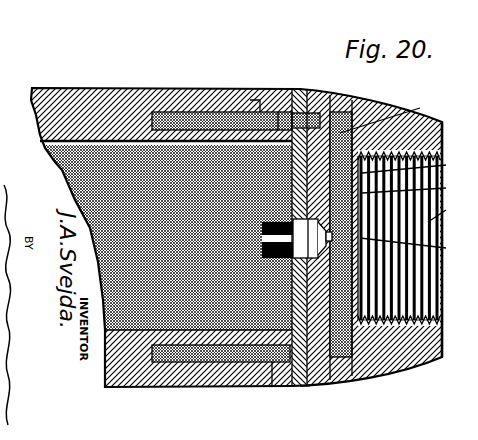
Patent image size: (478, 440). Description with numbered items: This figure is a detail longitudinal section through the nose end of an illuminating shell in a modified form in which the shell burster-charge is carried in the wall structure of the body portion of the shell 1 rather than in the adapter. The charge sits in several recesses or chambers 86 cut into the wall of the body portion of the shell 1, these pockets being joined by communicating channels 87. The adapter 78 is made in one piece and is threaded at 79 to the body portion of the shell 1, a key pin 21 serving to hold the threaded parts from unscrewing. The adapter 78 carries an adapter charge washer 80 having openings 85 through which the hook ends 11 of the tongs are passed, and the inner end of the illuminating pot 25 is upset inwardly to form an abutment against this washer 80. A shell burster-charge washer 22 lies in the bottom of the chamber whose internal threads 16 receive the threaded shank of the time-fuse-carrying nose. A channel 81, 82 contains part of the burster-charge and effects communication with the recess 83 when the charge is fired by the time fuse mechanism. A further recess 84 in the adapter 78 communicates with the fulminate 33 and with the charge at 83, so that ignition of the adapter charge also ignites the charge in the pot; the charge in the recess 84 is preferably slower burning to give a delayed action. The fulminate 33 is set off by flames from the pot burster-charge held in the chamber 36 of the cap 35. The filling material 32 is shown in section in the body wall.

The body portion of the shell 1 is at (91, 88).
The illuminating pot 25 is at (45, 141).
The filling material 32 is at (62, 167).
The recesses or chambers 86 is at (181, 112).
The threads 79 is at (255, 100).
The key pin 21 is at (278, 112).
The adapter charge washer 80 is at (302, 113).
The channel 81 is at (327, 113).
The hook ends of the tongs 11 is at (355, 112).
The adapter 78 is at (380, 114).
The channel 82 is at (387, 115).
The shell burster-charge washer 22 is at (414, 239).
The recess 83 is at (413, 191).
The internal threads 16 is at (446, 213).
The communicating channels 87 is at (413, 248).
The recess 84 is at (305, 250).
The cap 35 is at (258, 240).
The fulminate 33 is at (181, 198).
The chamber 36 is at (231, 307).
The openings 85 is at (306, 387).